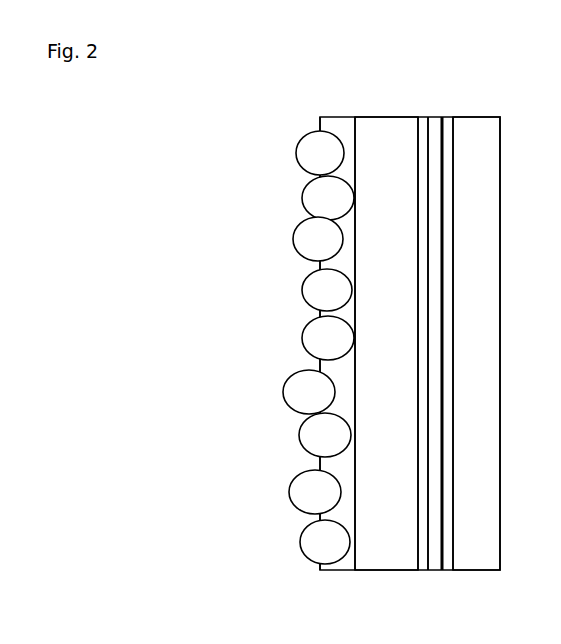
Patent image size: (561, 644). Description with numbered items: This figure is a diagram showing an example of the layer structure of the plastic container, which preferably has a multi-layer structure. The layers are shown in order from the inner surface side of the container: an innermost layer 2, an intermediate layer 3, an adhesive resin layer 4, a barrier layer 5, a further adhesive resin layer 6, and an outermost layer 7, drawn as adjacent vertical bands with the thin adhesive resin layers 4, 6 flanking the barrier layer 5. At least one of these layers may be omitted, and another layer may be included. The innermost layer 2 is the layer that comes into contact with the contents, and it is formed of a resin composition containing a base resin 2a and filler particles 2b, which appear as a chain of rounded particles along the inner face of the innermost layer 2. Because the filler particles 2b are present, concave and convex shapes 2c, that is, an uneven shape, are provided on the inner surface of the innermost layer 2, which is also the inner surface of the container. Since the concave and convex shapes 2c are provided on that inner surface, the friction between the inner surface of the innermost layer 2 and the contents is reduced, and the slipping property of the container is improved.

The innermost layer 2 is at (338, 105).
The base resin 2a is at (333, 125).
The filler particles 2b is at (304, 154).
The concave and convex shapes 2c is at (287, 202).
The intermediate layer 3 is at (388, 128).
The adhesive resin layer 4 is at (424, 570).
The barrier layer 5 is at (435, 122).
The adhesive resin layer 6 is at (448, 570).
The outermost layer 7 is at (477, 125).